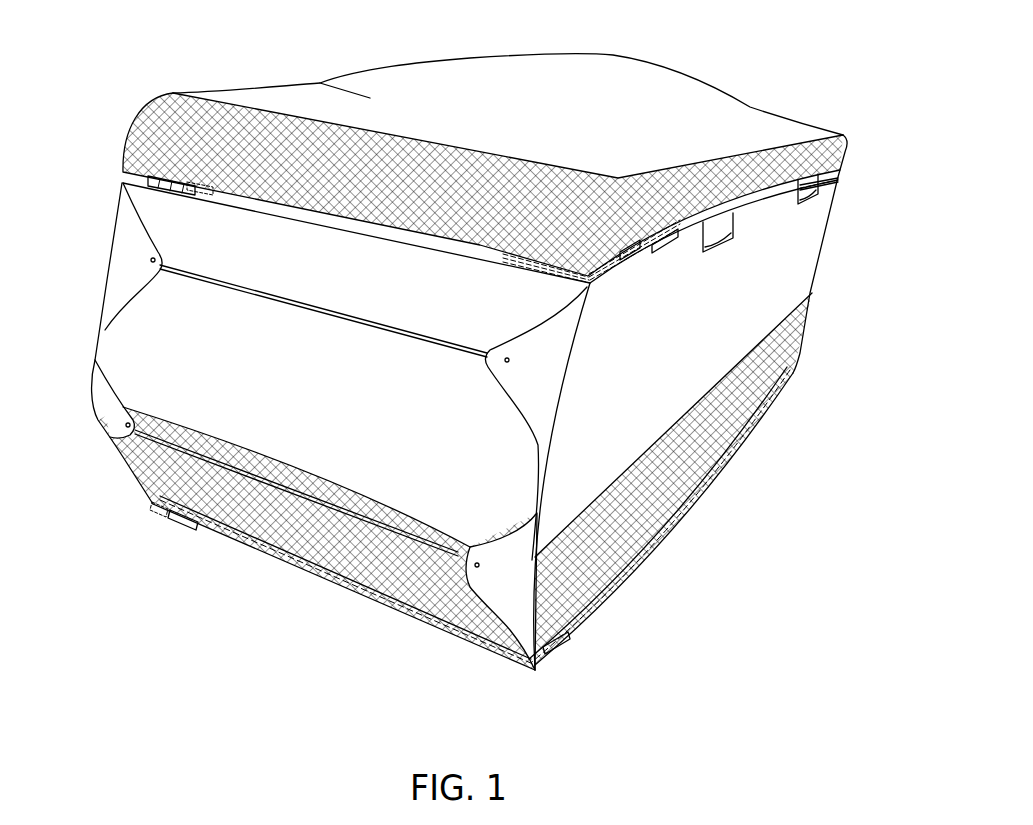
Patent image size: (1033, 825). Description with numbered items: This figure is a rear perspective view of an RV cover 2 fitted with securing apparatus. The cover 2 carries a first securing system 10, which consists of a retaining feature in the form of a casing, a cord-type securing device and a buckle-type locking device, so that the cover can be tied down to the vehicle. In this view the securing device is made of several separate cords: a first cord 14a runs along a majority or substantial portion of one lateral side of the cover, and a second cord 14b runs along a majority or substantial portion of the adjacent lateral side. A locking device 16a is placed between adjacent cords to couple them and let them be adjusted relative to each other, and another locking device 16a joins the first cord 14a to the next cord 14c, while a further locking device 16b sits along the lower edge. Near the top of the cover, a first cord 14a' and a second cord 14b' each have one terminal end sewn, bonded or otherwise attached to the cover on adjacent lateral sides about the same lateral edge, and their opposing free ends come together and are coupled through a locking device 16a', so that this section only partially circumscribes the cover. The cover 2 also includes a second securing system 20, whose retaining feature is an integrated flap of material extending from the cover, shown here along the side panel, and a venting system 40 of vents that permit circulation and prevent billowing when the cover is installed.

The RV cover 2 is at (805, 74).
The first securing system 10 is at (365, 612).
The second securing system 20 is at (123, 270).
The venting system 40 is at (818, 182).
The first cord 14a is at (314, 455).
The second cord 14b is at (670, 479).
The cord 14c is at (157, 505).
The locking device 16a is at (565, 669).
The fastener element 16b is at (180, 525).
The first cord 14a' is at (408, 145).
The locking device 16a' is at (493, 149).
The second cord 14b' is at (483, 158).